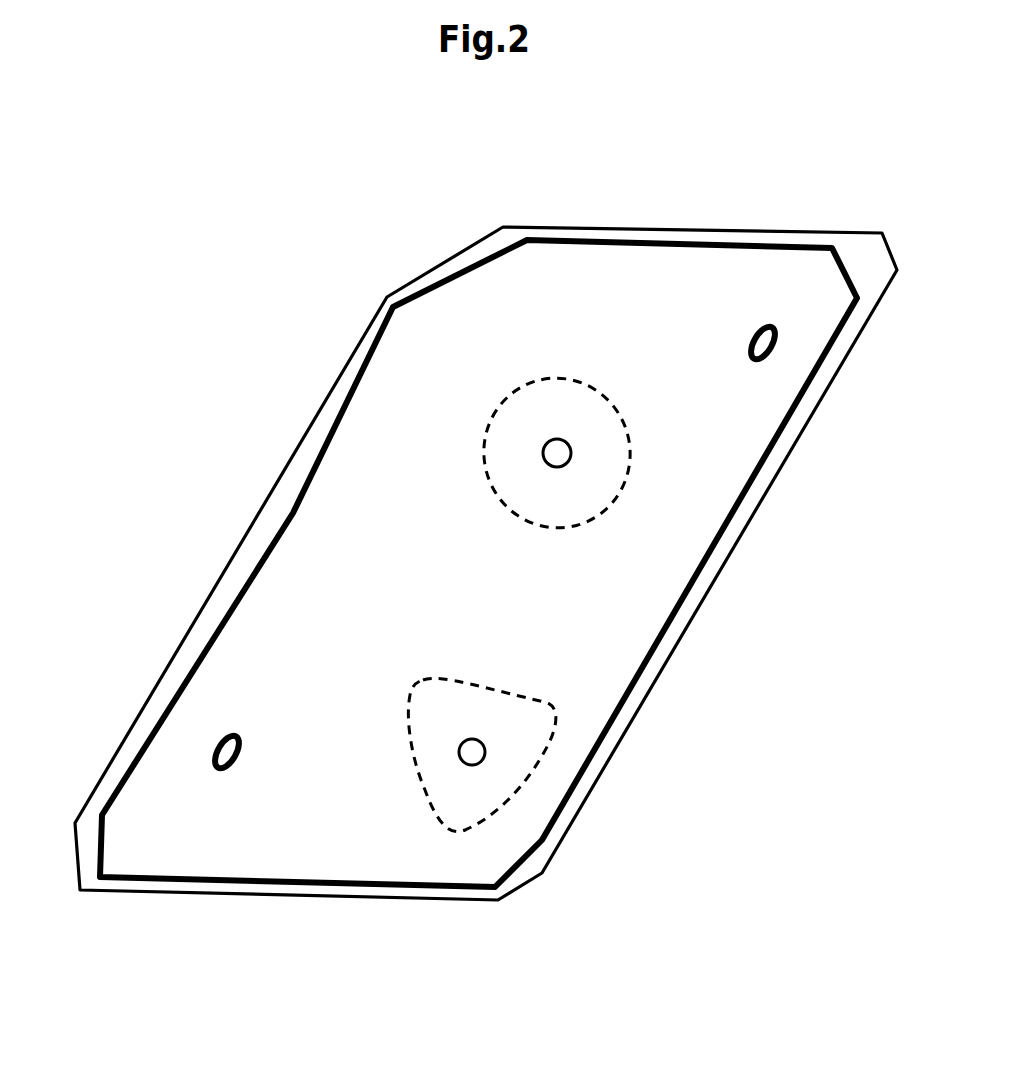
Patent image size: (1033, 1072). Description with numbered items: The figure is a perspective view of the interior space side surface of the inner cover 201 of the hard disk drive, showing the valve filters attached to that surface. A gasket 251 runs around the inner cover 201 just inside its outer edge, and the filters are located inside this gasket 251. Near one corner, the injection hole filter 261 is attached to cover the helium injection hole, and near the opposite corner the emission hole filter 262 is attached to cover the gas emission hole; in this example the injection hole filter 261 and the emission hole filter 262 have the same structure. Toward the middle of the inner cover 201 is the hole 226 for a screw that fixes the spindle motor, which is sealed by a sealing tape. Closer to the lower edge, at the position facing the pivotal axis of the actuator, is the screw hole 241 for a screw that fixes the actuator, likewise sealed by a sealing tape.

The inner cover 201 is at (456, 256).
The gasket 251 is at (613, 242).
The hole for a screw for fixing the SPM 226 is at (567, 438).
The screw hole 241 is at (476, 740).
The injection hole filter 261 is at (780, 337).
The emission hole filter 262 is at (210, 749).